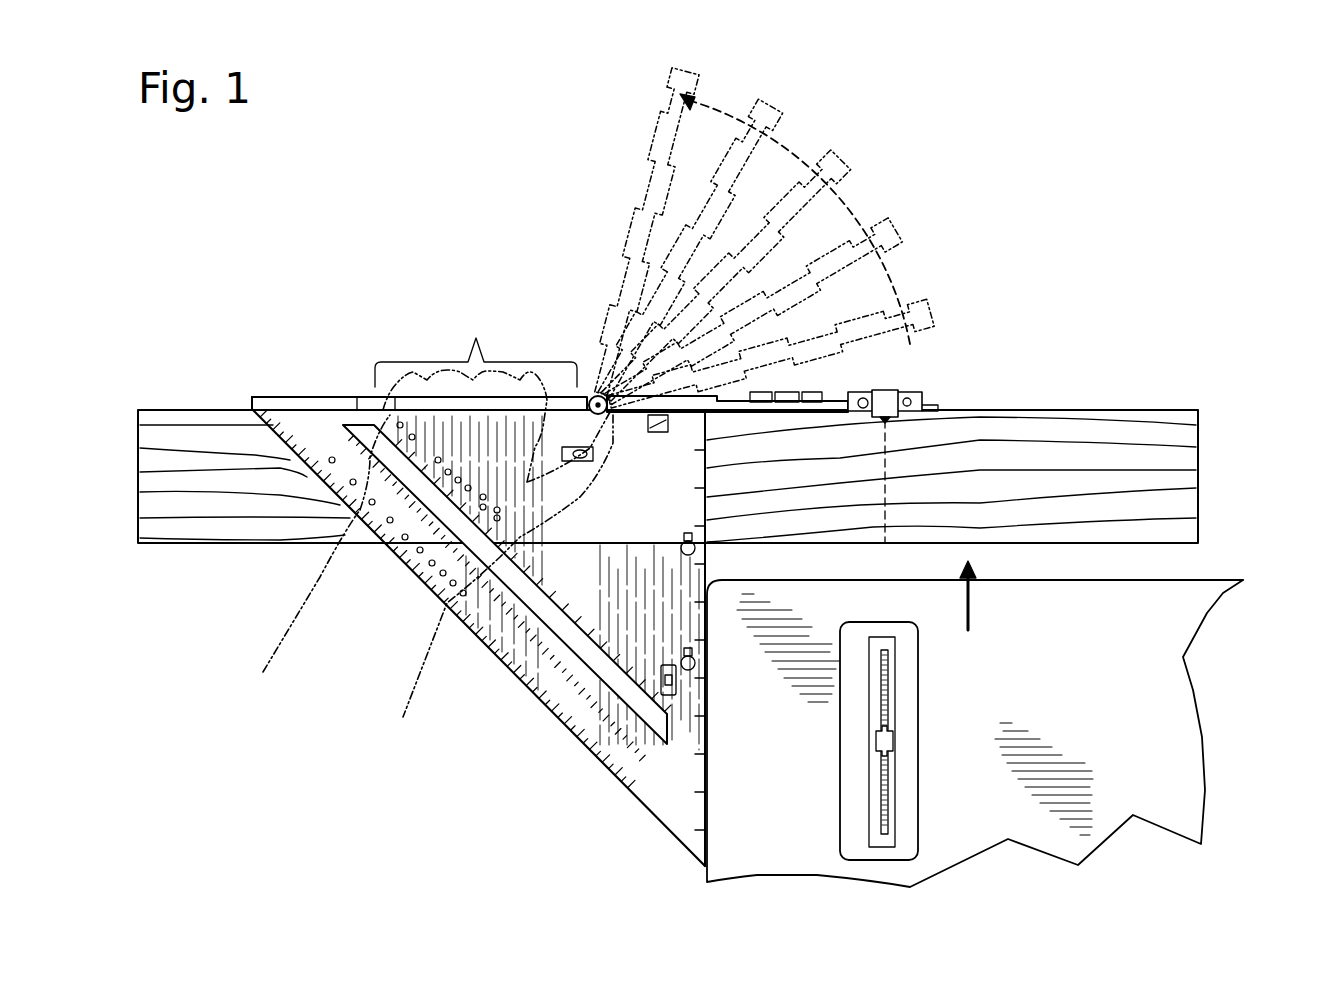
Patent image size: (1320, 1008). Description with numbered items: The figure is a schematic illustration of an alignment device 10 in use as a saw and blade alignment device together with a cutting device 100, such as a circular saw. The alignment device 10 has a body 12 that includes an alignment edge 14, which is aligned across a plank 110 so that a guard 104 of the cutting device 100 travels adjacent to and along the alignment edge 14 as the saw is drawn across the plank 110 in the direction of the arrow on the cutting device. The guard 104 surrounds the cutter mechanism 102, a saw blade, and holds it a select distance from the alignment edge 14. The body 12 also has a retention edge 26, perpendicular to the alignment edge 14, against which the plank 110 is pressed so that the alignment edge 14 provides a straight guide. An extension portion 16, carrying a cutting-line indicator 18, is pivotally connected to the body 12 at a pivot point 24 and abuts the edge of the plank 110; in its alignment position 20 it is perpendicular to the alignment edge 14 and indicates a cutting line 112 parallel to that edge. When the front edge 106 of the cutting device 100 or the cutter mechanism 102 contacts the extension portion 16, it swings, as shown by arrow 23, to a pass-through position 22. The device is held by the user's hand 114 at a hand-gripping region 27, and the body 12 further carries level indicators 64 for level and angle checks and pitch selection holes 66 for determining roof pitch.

The alignment device 10 is at (283, 372).
The body 12 is at (649, 820).
The alignment edge 14 is at (708, 552).
The extension portion 16 is at (827, 403).
The cutting-line indicator 18 is at (883, 390).
The alignment position 20 is at (918, 393).
The pass-through position 22 is at (897, 216).
The arrow 23 is at (848, 208).
The pivot point 24 is at (595, 395).
The retention edge 26 is at (346, 399).
The hand-gripping region 27 is at (476, 392).
The level indicators 64 is at (593, 462).
The pitch selection holes 66 is at (312, 452).
The cutting device 100 is at (1252, 705).
The cutter mechanism 102 is at (903, 688).
The guard 104 is at (814, 763).
The front edge 106 is at (1106, 580).
The plank 110 is at (1128, 487).
The cutting line 112 is at (888, 492).
The user's hand 114 is at (292, 620).